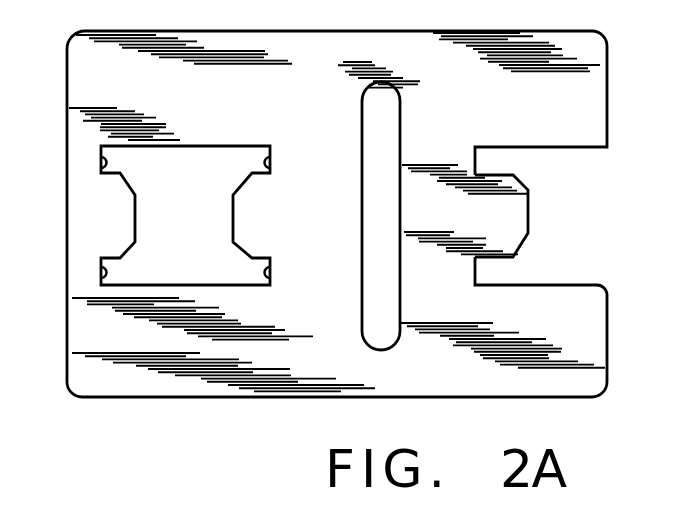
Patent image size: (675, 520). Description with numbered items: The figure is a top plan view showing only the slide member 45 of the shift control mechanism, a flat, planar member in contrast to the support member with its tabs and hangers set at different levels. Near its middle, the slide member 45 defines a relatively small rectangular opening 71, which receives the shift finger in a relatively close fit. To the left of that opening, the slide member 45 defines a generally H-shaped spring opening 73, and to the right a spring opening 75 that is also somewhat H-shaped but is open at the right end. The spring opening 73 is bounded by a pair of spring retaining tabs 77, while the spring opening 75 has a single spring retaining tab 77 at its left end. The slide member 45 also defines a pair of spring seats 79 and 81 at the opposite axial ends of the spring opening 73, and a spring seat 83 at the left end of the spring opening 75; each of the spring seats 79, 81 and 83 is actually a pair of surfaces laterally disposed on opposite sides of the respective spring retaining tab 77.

The slide member 45 is at (298, 64).
The rectangular opening 71 is at (395, 112).
The spring opening 73 is at (193, 160).
The spring opening 75 is at (551, 225).
The spring retaining tab 77 is at (252, 208).
The spring seat 79 is at (101, 159).
The spring seat 81 is at (271, 168).
The spring seat 83 is at (479, 163).